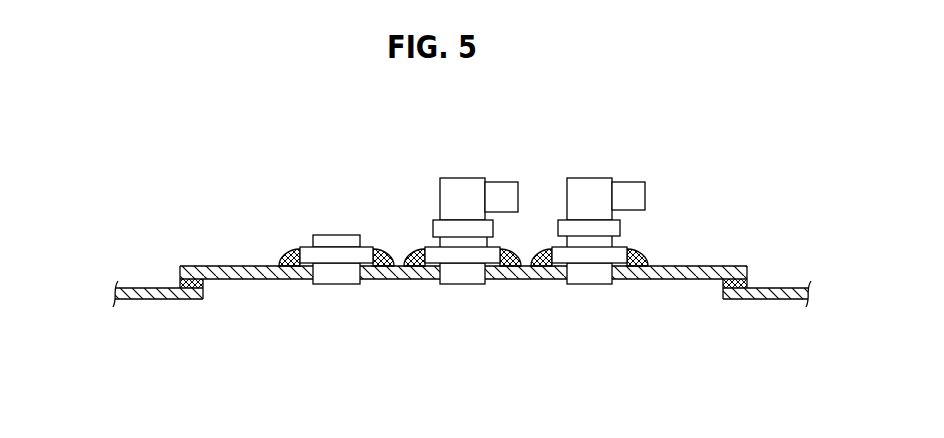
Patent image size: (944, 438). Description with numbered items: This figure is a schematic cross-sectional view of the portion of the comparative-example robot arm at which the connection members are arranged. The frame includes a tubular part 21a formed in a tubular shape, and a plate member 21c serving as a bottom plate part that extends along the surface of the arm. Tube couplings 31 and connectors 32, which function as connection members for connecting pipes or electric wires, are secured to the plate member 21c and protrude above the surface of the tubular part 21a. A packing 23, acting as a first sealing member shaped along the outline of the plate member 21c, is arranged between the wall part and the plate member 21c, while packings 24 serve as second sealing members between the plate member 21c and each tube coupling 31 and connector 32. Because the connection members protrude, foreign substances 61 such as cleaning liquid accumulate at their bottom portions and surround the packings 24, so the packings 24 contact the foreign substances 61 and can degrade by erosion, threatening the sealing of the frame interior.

The tubular part 21a is at (152, 300).
The plate member 21c is at (398, 281).
The packing 23 is at (193, 300).
The packings 24 is at (308, 286).
The tube couplings 31 is at (463, 190).
The connectors 32 is at (340, 245).
The foreign substances 61 is at (291, 248).